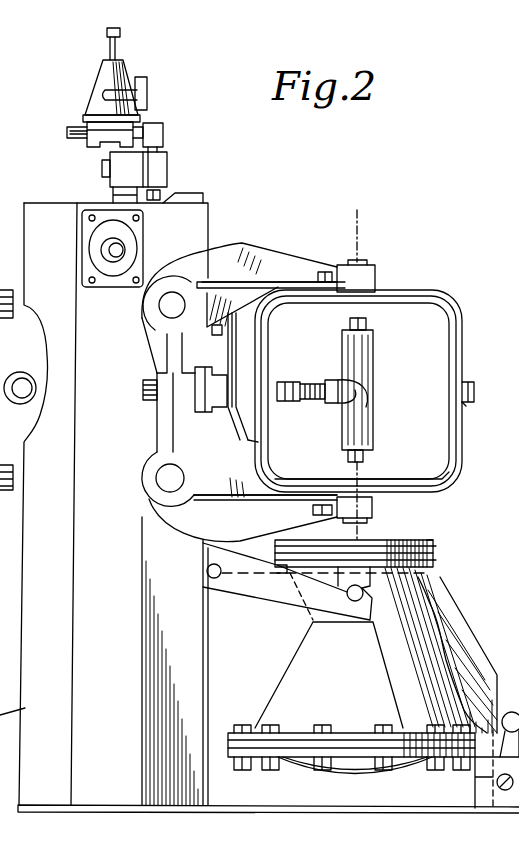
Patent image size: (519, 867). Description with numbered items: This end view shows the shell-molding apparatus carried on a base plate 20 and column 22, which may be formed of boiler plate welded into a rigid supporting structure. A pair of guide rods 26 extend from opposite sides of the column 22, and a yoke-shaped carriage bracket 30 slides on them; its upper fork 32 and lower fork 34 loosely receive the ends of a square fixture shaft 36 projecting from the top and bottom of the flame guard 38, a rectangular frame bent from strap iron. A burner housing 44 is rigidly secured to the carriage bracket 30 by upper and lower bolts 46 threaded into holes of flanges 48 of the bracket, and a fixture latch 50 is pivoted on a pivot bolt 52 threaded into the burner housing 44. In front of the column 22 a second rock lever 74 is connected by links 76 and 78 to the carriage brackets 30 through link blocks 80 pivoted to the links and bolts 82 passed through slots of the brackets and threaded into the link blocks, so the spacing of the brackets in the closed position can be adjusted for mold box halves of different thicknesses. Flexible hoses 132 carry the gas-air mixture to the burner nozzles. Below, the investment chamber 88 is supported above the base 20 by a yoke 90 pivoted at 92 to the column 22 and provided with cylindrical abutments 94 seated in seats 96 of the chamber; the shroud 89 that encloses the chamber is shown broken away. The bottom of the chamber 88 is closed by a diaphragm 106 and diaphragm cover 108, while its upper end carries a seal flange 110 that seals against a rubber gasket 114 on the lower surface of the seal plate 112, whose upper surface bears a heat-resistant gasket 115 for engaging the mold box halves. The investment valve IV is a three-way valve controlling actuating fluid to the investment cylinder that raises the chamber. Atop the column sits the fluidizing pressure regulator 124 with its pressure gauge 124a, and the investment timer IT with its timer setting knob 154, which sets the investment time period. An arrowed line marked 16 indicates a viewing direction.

The axis / direction arrow 16 is at (332, 222).
The base plate 20 is at (213, 810).
The column 22 is at (202, 218).
The guide rods 26 is at (165, 304).
The carriage brackets 30 is at (255, 255).
The upper fork 32 is at (370, 276).
The lower fork 34 is at (372, 510).
The fixture shaft 36 is at (367, 263).
The flame guard 38 is at (464, 356).
The burner housing 44 is at (442, 453).
The bolts 46 is at (327, 272).
The flanges 48 is at (290, 282).
The fixture latch 50 is at (463, 405).
The pivot bolt 52 is at (478, 392).
The second rock lever 74 is at (232, 362).
The link 76 is at (257, 441).
The link 78 is at (220, 353).
The link blocks 80 is at (212, 392).
The bolts 82 is at (145, 392).
The investment chamber 88 is at (290, 661).
The shroud 89 is at (458, 628).
The yoke 90 is at (258, 597).
The pivot 92 is at (207, 571).
The cylindrical abutments 94 is at (348, 600).
The seats 96 is at (338, 578).
The diaphragm 106 is at (300, 753).
The diaphragm cover 108 is at (345, 770).
The seal flange 110 is at (434, 566).
The seal plate 112 is at (434, 546).
The gasket 114 is at (434, 560).
The heat resistant gasket 115 is at (428, 540).
The fluidizing pressure regulator 124 is at (102, 77).
The pressure gauge 124a is at (147, 100).
The flexible hoses 132 is at (293, 383).
The timer setting knob 154 is at (125, 247).
The investment timer IT is at (100, 217).
The investment valve IV is at (497, 745).